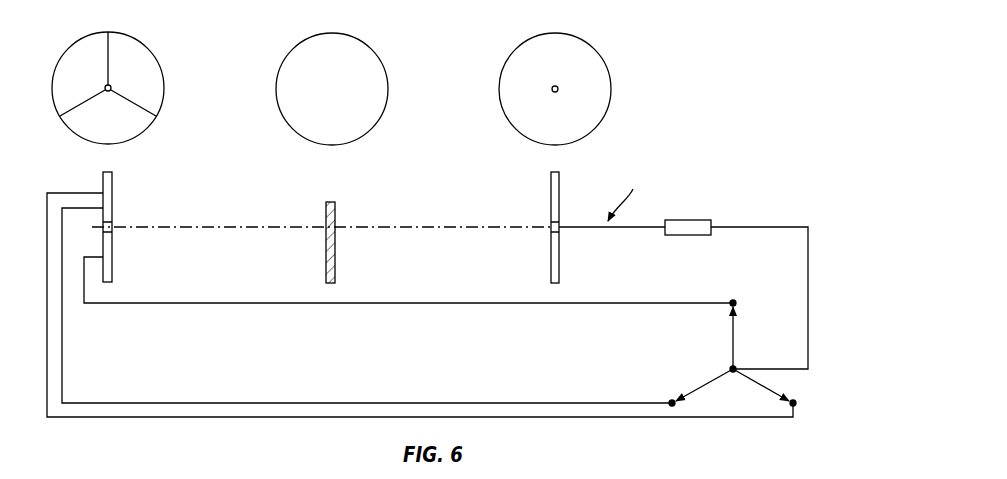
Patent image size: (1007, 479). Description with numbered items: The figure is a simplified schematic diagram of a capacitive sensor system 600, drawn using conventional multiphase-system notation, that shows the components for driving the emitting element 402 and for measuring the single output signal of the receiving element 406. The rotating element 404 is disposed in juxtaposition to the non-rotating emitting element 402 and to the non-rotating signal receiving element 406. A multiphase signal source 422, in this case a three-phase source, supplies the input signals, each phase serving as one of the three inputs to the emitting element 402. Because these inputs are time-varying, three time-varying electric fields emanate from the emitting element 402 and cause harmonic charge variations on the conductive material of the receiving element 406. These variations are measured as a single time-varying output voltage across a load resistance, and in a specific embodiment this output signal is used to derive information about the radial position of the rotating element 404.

The sensor system 600 is at (813, 72).
The emitting element 402 is at (112, 201).
The rotating element 404 is at (326, 213).
The receiving element 406 is at (551, 213).
The multiphase signal source 422 is at (711, 364).